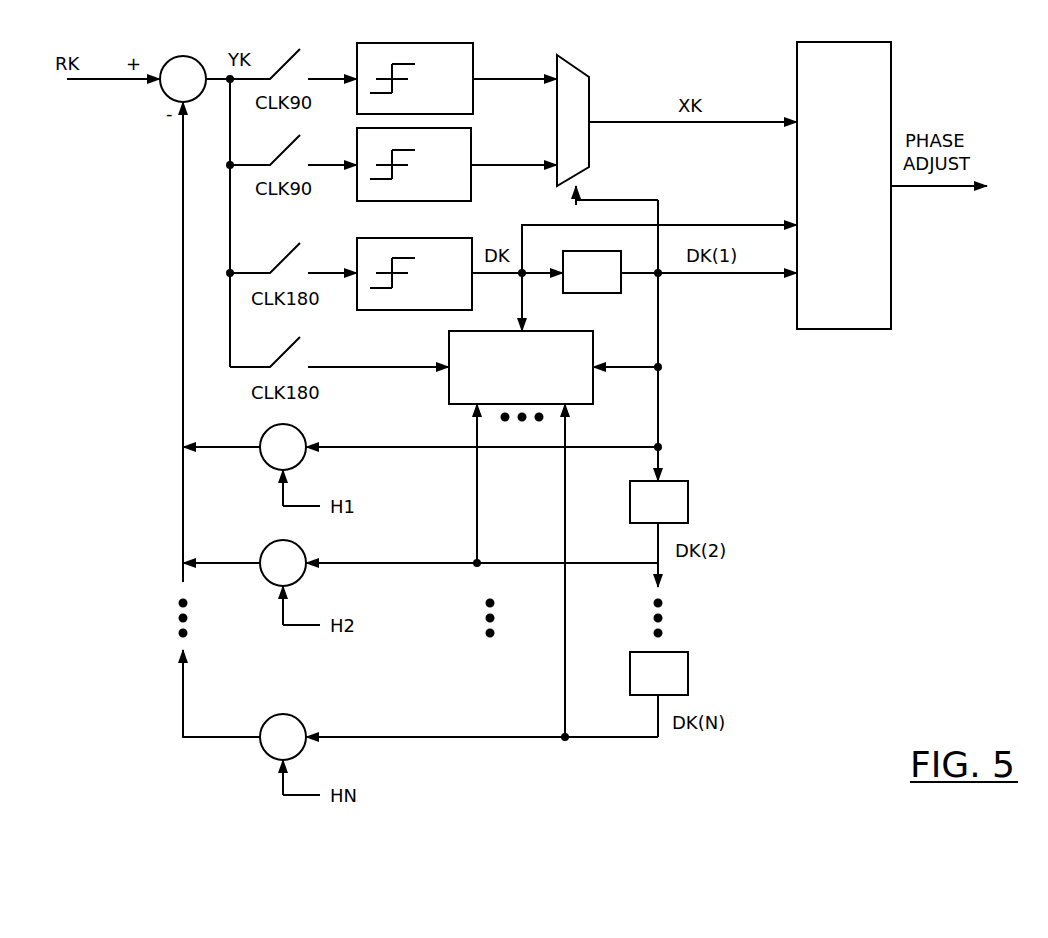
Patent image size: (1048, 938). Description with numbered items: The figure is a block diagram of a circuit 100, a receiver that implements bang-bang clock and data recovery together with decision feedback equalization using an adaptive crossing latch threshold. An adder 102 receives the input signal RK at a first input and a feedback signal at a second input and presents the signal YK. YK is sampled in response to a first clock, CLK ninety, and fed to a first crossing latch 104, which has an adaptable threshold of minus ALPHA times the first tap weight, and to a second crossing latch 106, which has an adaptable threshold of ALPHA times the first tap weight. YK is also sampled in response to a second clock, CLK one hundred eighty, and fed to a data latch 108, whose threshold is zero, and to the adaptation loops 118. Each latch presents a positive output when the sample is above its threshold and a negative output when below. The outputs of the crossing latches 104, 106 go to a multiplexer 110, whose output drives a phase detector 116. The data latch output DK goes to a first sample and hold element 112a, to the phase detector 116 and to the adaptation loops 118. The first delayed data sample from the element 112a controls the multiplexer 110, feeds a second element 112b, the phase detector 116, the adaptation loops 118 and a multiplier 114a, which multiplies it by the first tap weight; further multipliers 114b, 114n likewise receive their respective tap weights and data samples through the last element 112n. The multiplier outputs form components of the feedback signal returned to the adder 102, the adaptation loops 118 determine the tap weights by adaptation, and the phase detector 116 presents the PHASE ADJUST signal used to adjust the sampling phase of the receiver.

The circuit 100 is at (855, 563).
The adder 102 is at (183, 56).
The crossing latch 104 is at (391, 43).
The crossing latch 106 is at (442, 201).
The data latch 108 is at (391, 238).
The multiplexer 110 is at (573, 63).
The sample and hold element 112a is at (585, 293).
The sample and hold element 112b is at (640, 523).
The sample and hold element 112n is at (640, 695).
The multiplier 114a is at (268, 466).
The multiplier 114b is at (268, 582).
The multiplier 114n is at (268, 756).
The phase detector 116 is at (860, 329).
The adaptation loops 118 is at (468, 406).